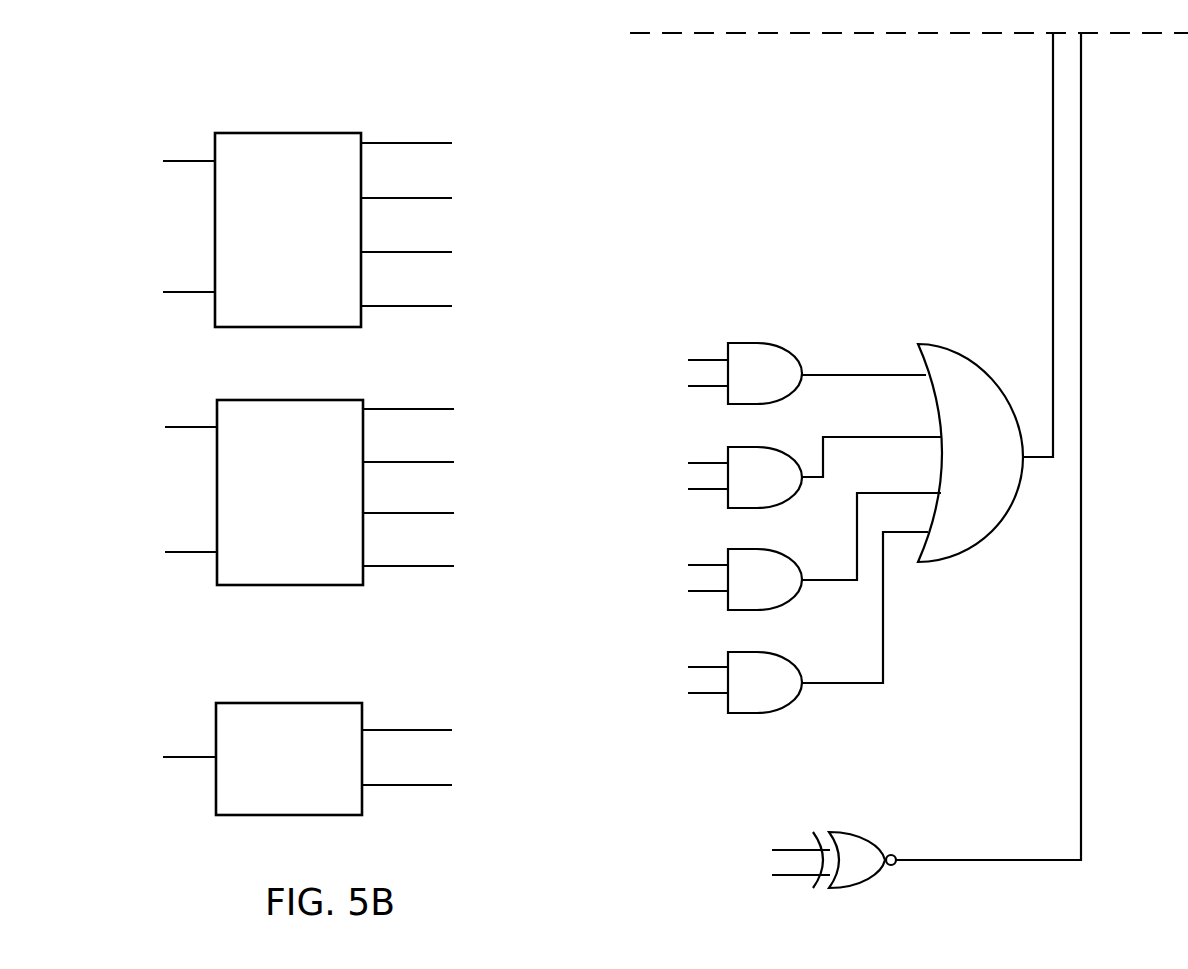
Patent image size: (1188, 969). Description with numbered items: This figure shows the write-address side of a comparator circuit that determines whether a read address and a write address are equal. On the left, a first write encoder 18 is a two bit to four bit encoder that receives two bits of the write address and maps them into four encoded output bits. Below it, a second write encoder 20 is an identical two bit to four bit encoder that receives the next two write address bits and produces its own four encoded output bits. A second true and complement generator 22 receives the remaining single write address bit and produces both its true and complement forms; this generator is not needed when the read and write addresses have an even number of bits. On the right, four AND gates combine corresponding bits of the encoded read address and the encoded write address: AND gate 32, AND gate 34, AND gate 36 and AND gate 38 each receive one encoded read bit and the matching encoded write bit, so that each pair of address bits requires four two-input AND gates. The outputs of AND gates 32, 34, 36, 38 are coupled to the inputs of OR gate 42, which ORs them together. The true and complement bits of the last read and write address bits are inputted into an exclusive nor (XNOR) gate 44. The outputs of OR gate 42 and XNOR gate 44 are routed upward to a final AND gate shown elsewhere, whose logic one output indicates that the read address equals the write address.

The first write encoder 18 is at (361, 133).
The second write encoder 20 is at (363, 400).
The second true and complement generator 22 is at (362, 712).
The AND gate 32 is at (771, 383).
The AND gate 34 is at (771, 487).
The AND gate 36 is at (771, 589).
The AND gate 38 is at (771, 692).
The OR gate 42 is at (997, 465).
The exclusive nor (XNOR) gate 44 is at (866, 838).